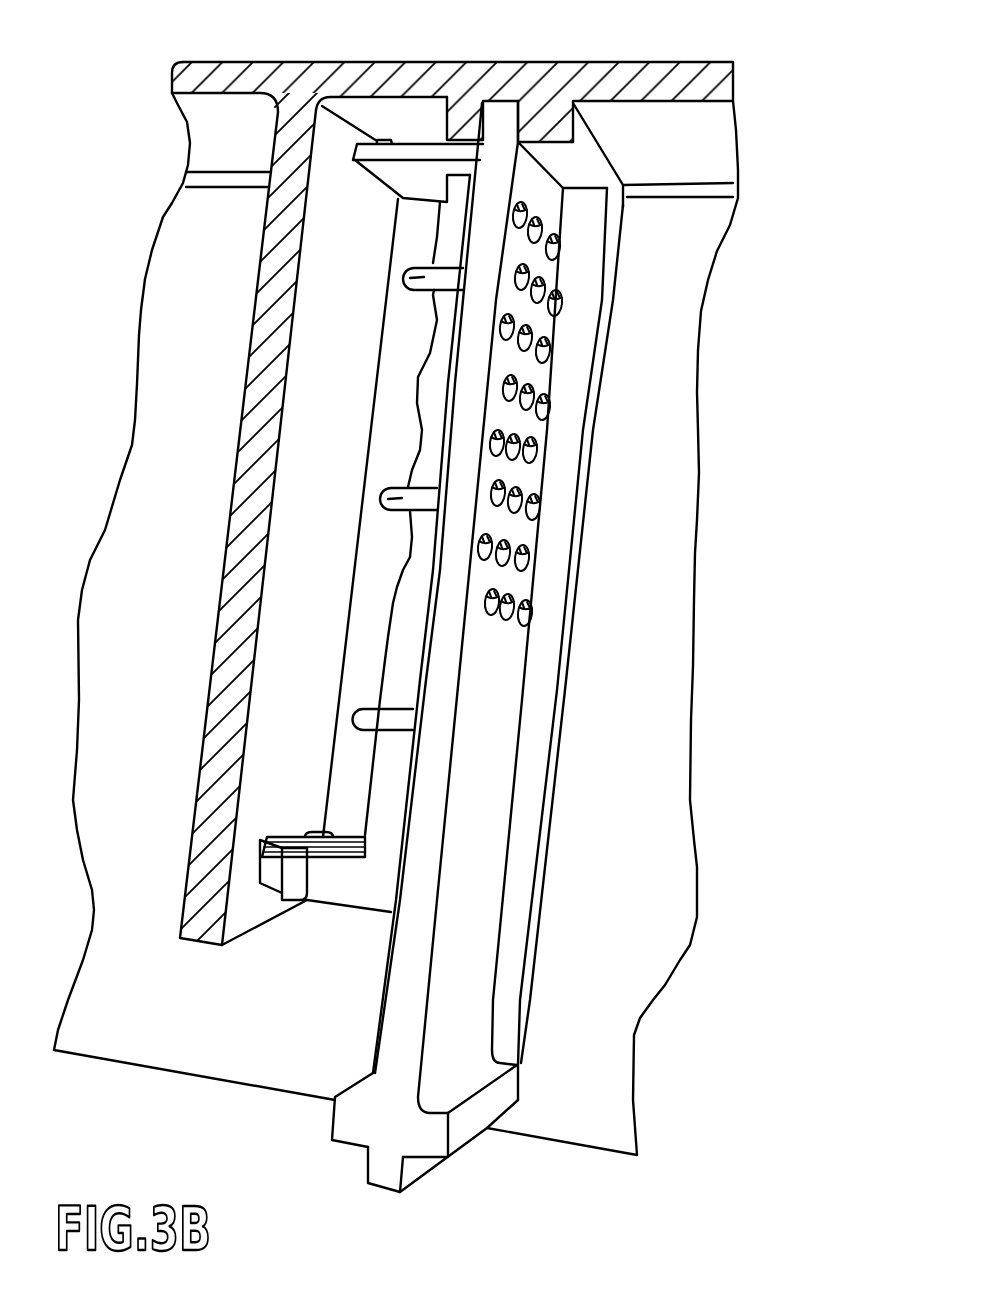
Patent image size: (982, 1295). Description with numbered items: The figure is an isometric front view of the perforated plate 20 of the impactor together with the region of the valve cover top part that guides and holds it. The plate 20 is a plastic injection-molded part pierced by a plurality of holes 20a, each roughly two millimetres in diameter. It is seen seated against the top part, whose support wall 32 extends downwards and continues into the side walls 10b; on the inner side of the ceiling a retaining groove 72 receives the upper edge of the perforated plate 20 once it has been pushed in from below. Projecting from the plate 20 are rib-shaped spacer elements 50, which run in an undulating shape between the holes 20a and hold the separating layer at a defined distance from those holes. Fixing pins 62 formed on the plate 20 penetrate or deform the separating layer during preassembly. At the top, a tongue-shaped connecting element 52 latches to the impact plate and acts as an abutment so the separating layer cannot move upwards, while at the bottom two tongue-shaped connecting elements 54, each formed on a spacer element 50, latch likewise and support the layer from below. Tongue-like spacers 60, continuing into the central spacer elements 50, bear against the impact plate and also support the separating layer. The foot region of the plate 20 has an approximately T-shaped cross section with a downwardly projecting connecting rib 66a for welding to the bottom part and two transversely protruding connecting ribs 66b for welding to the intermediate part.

The side walls 10b is at (673, 88).
The support wall 32 is at (233, 561).
The tongue-shaped connecting element 52 is at (381, 142).
The retaining groove 72 is at (513, 103).
The rib-shaped spacer elements 50 is at (412, 604).
The fixing pins 62 is at (407, 280).
The perforated plate 20 is at (522, 806).
The holes 20a is at (523, 616).
The tongue-shaped connecting elements 54 is at (327, 835).
The spacers 60 is at (270, 877).
The connecting rib 66a is at (388, 1190).
The connecting ribs 66b is at (336, 1105).